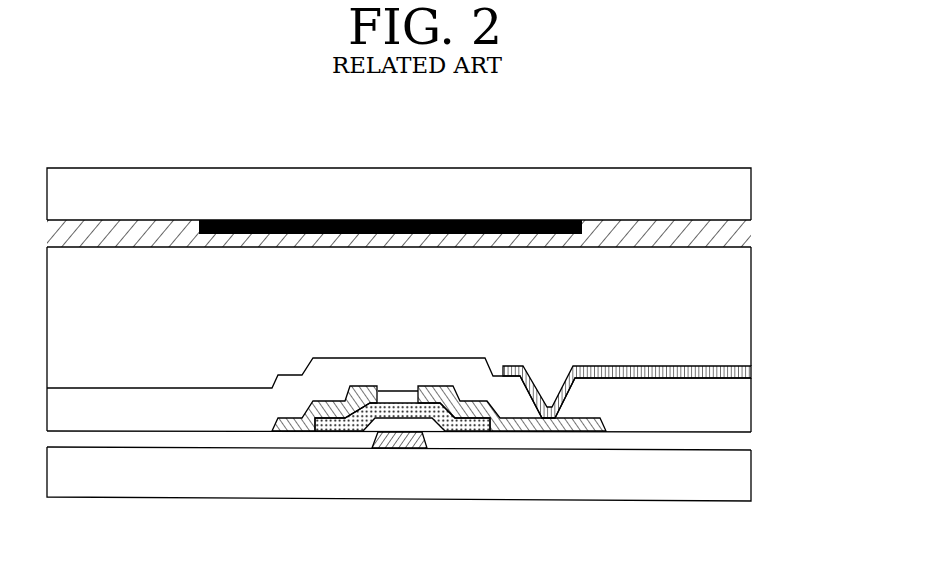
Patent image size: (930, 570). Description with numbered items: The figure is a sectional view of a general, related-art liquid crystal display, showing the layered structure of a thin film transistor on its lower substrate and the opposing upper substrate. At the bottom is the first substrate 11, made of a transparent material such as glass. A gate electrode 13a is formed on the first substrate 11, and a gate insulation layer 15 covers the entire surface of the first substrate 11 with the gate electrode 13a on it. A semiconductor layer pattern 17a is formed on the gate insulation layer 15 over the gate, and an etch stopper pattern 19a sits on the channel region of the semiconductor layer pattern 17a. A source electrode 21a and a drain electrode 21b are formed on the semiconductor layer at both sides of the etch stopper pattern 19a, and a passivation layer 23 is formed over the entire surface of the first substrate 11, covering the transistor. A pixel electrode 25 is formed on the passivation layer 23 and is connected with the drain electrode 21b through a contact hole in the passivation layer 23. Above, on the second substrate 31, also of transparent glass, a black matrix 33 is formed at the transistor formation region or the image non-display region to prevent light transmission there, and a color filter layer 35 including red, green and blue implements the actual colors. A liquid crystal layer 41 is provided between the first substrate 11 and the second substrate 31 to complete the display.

The first substrate 11 is at (733, 478).
The gate electrode 13a is at (383, 440).
The gate insulation layer 15 is at (733, 443).
The semiconductor layer pattern 17a is at (328, 424).
The etch stopper pattern 19a is at (410, 393).
The source electrode 21a is at (283, 431).
The drain electrode 21b is at (541, 432).
The passivation layer 23 is at (733, 400).
The pixel electrode 25 is at (733, 372).
The second substrate 31 is at (732, 192).
The black matrix 33 is at (422, 218).
The color filter layer 35 is at (733, 237).
The liquid crystal layer 41 is at (733, 308).